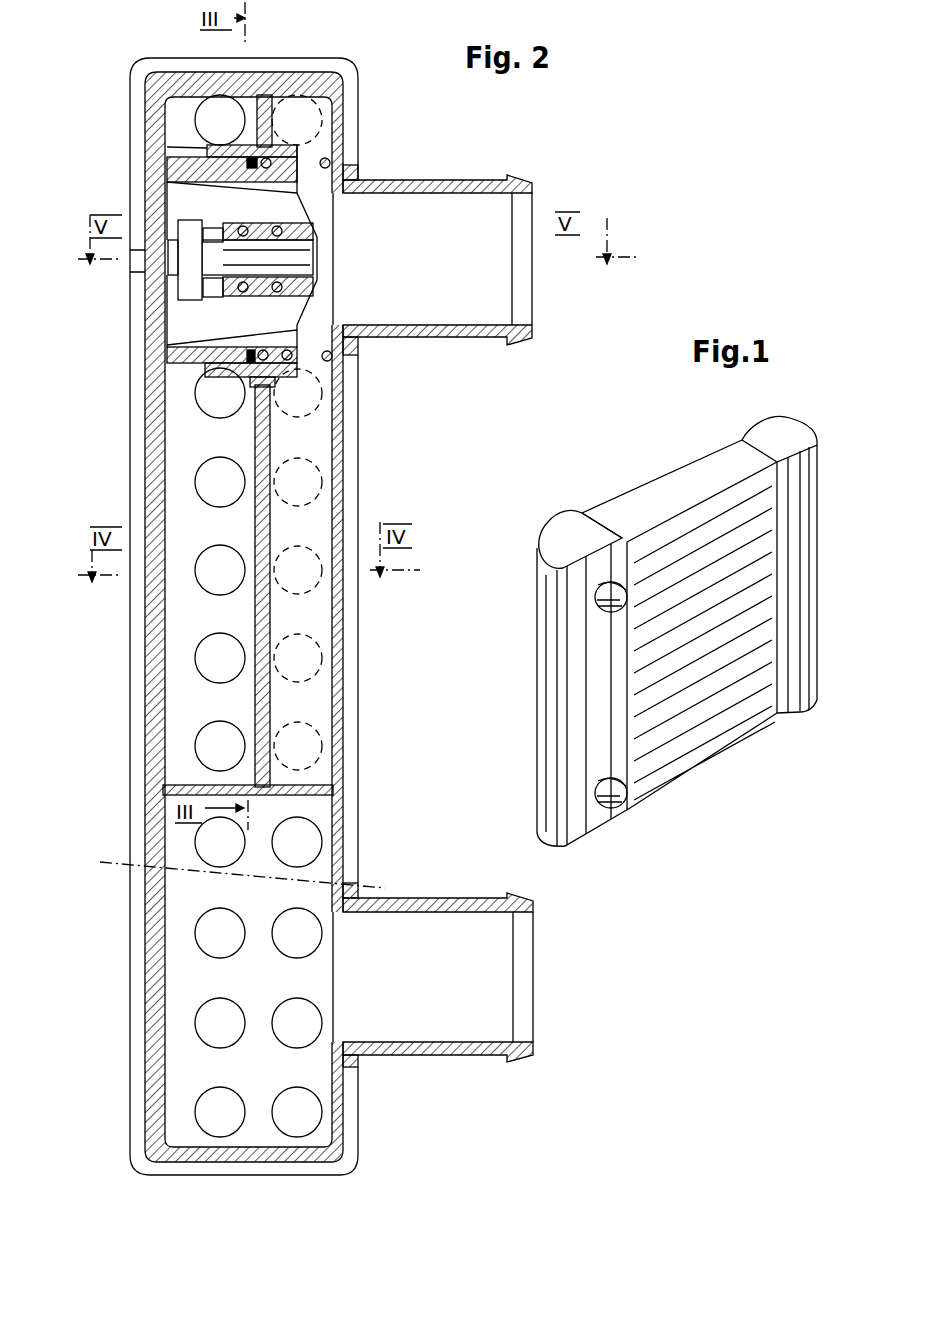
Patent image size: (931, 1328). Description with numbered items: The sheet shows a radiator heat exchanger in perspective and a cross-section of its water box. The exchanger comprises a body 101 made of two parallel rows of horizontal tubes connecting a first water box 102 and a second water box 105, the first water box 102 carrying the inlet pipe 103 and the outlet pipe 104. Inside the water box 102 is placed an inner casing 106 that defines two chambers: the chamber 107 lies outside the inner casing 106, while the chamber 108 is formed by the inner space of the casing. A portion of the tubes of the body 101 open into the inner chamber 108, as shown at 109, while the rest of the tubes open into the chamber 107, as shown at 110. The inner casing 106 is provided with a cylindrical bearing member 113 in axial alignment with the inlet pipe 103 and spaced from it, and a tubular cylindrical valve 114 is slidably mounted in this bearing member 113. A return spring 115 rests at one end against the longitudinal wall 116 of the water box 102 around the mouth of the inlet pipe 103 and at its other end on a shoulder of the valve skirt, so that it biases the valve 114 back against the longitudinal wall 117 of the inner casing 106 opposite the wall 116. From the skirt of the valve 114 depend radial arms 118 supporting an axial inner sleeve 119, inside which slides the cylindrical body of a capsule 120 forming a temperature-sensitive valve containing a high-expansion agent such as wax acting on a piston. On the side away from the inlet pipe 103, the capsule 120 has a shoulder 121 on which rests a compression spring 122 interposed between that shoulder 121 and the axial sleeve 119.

In FIG. 1, the body 101 is at (678, 495).
In FIG. 2, the first water box 102 is at (372, 22).
In FIG. 1, the first water box 102 is at (558, 545).
In FIG. 2, the inlet pipe 103 is at (457, 181).
In FIG. 1, the inlet pipe 103 is at (595, 600).
In FIG. 2, the outlet pipe 104 is at (457, 898).
In FIG. 1, the outlet pipe 104 is at (616, 812).
In FIG. 1, the second water box 105 is at (790, 435).
In FIG. 2, the inner casing 106 is at (276, 433).
In FIG. 2, the chamber 107 is at (180, 906).
In FIG. 2, the inner chamber 108 is at (190, 436).
In FIG. 2, the tube ends opening into the inner chamber 109 is at (200, 657).
In FIG. 2, the tube ends opening into the outer chamber 110 is at (288, 946).
In FIG. 2, the cylindrical bearing member 113 is at (175, 152).
In FIG. 2, the tubular cylindrical valve 114 is at (172, 171).
In FIG. 2, the return spring 115 is at (340, 152).
In FIG. 2, the longitudinal wall of the water box 116 is at (345, 118).
In FIG. 2, the longitudinal wall of the inner casing 117 is at (152, 118).
In FIG. 2, the radial arms 118 is at (312, 220).
In FIG. 2, the axial inner sleeve 119 is at (320, 258).
In FIG. 2, the capsule 120 is at (168, 280).
In FIG. 2, the shoulder 121 is at (220, 228).
In FIG. 2, the compression spring 122 is at (258, 302).